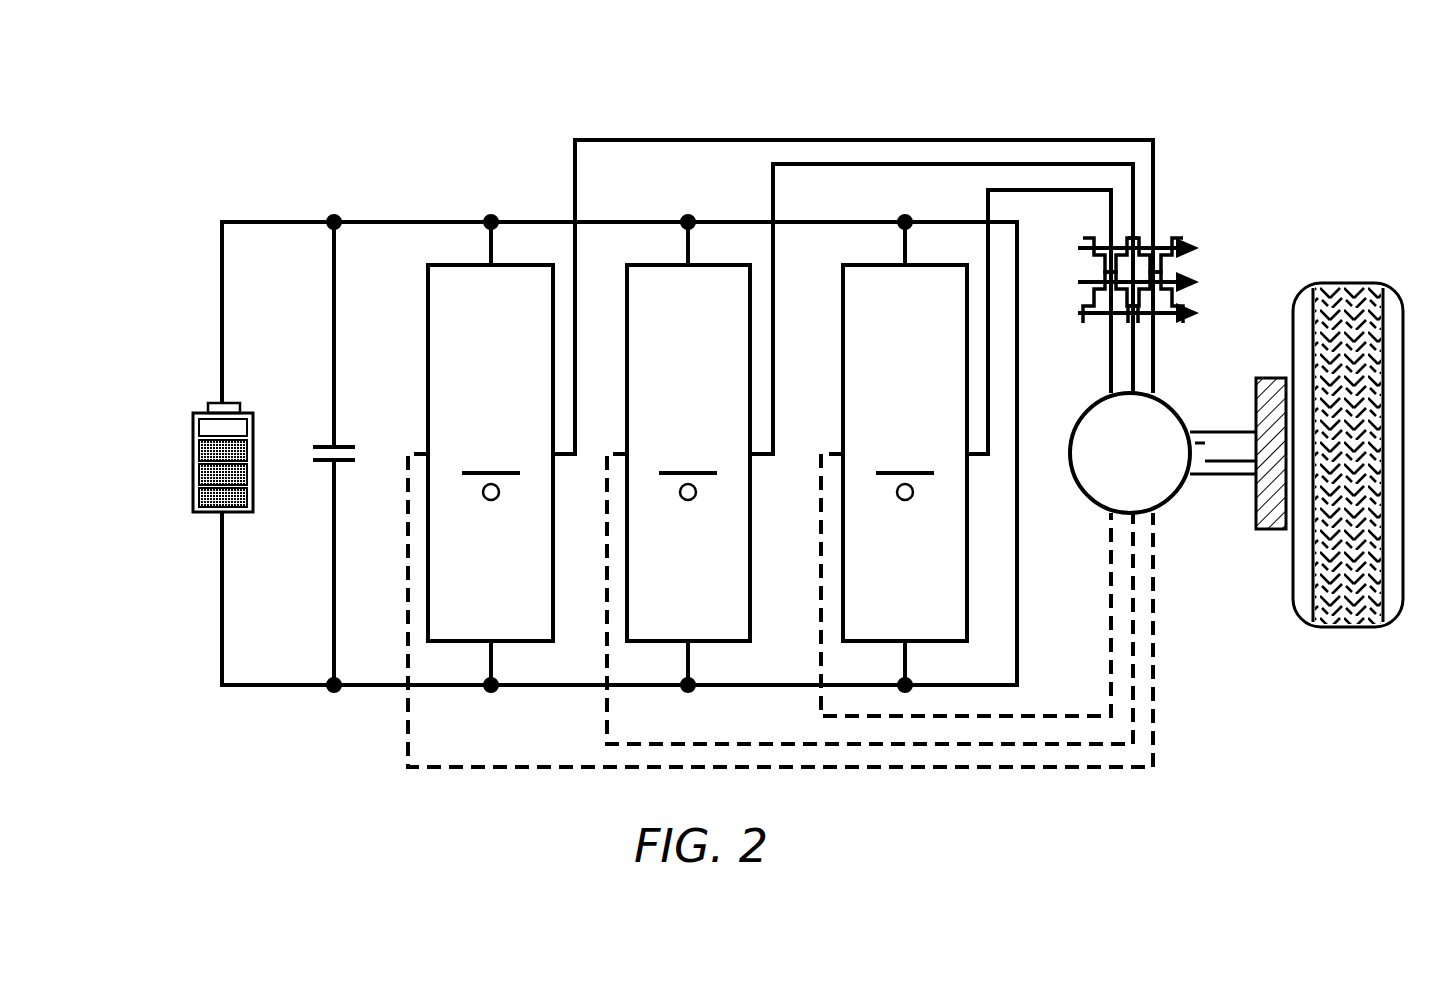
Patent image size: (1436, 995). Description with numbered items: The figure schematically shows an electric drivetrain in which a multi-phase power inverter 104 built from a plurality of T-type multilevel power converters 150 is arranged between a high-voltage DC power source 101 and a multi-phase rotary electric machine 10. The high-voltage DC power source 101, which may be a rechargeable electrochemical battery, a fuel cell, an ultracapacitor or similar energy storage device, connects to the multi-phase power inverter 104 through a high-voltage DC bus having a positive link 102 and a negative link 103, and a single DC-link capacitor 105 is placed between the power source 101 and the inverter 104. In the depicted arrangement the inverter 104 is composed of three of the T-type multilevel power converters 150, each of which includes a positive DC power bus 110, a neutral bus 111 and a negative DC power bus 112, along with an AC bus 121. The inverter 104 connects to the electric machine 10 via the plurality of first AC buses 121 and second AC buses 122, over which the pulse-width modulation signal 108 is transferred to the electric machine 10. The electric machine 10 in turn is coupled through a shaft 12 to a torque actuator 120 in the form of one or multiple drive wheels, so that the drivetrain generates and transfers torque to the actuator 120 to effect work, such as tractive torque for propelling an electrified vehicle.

The electric machine 10 is at (1112, 468).
The motor shaft / drive axle 12 is at (1213, 432).
The high-voltage DC power source 101 is at (192, 460).
The positive link 102 is at (222, 302).
The negative link 103 is at (222, 617).
The multi-phase power inverter 104 is at (697, 359).
The DC-link capacitor 105 is at (343, 445).
The pulse-width modulation signal 108 is at (1175, 232).
The positive DC power bus 110 is at (433, 220).
The neutral bus 111 is at (472, 558).
The negative DC power bus 112 is at (375, 690).
The torque actuator 120 is at (1345, 283).
The first AC buses 121 is at (1012, 186).
The second AC buses 122 is at (1114, 662).
The T-type multilevel power converter 150 is at (472, 351).